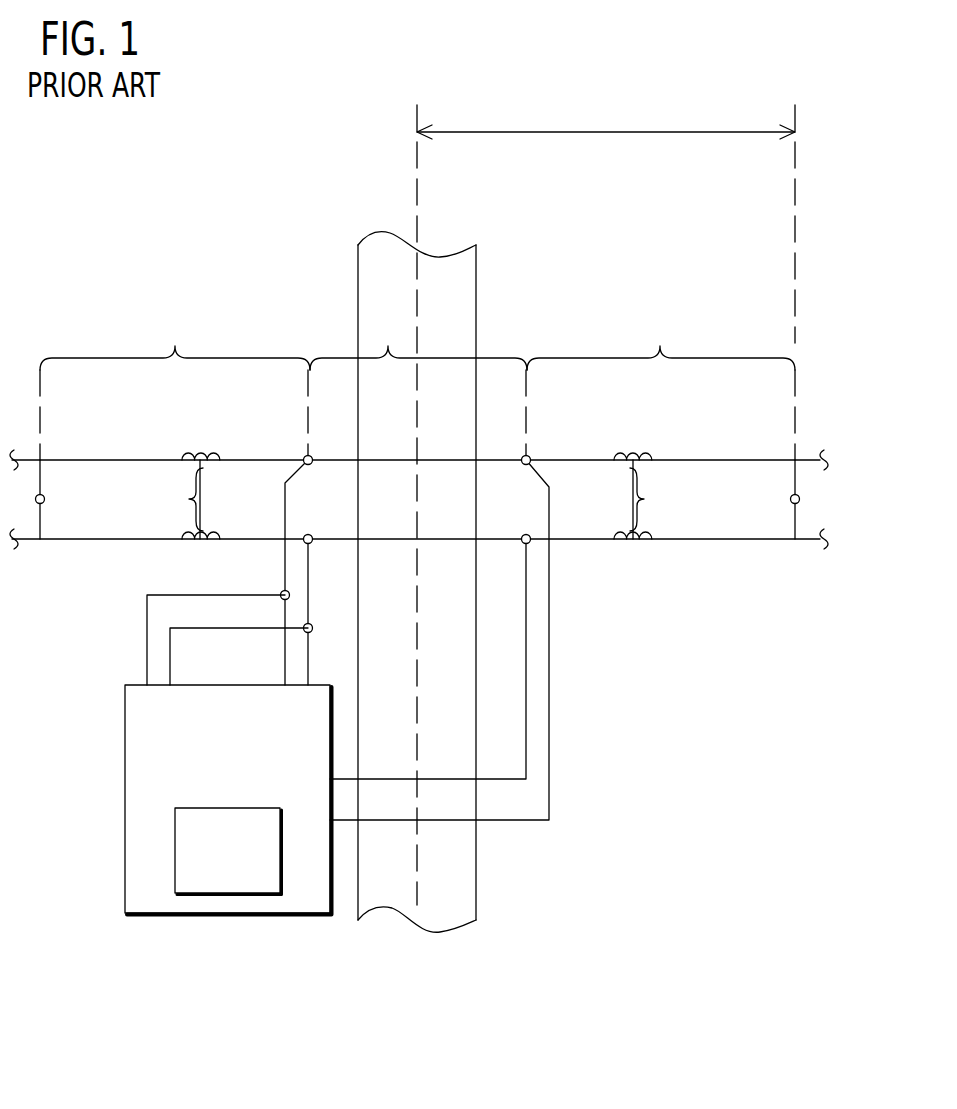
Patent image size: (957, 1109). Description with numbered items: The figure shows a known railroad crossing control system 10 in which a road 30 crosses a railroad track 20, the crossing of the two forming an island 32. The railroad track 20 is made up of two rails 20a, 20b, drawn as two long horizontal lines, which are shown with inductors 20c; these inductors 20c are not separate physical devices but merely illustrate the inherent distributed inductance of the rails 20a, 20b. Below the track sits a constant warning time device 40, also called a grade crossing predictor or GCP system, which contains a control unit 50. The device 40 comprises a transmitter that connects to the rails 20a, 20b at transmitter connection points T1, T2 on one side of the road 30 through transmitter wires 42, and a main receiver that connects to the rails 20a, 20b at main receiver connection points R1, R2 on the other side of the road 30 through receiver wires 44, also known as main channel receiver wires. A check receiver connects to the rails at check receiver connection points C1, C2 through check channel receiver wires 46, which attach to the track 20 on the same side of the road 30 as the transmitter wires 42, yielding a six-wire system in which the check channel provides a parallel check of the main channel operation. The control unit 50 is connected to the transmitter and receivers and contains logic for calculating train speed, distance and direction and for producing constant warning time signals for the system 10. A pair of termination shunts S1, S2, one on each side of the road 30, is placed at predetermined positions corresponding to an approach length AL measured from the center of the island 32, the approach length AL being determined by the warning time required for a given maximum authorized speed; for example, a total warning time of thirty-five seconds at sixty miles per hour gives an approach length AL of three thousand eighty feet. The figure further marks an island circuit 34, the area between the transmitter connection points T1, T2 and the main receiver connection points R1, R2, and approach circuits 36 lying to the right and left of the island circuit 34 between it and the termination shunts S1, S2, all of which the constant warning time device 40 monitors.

The railroad crossing control system 10 is at (660, 246).
The railroad track 20 is at (467, 501).
The rail 20a is at (140, 460).
The rail 20b is at (140, 539).
The inductors 20c is at (417, 496).
The road 30 is at (458, 320).
The island 32 is at (462, 515).
The island circuit 34 is at (388, 346).
The approach circuits 36 is at (175, 346).
The constant warning time device 40 is at (125, 800).
The transmitter wires 42 is at (285, 505).
The receiver wires 44 is at (527, 657).
The check channel receiver wires 46 is at (147, 638).
The control unit 50 is at (225, 893).
The termination shunt S1 is at (46, 498).
The termination shunt S2 is at (790, 497).
The transmitter connection point T1 is at (308, 456).
The transmitter connection point T2 is at (308, 535).
The main receiver connection point R1 is at (527, 456).
The main receiver connection point R2 is at (526, 535).
The check receiver connection point C1 is at (284, 591).
The check receiver connection point C2 is at (312, 630).
The approach length AL is at (606, 281).